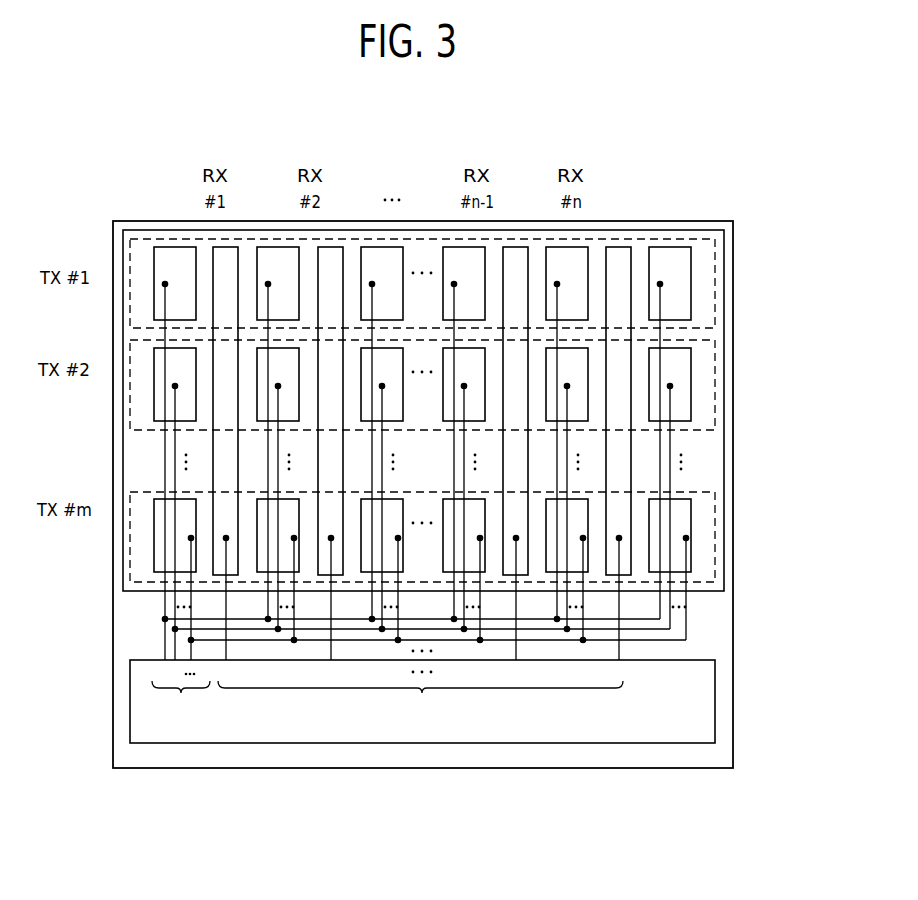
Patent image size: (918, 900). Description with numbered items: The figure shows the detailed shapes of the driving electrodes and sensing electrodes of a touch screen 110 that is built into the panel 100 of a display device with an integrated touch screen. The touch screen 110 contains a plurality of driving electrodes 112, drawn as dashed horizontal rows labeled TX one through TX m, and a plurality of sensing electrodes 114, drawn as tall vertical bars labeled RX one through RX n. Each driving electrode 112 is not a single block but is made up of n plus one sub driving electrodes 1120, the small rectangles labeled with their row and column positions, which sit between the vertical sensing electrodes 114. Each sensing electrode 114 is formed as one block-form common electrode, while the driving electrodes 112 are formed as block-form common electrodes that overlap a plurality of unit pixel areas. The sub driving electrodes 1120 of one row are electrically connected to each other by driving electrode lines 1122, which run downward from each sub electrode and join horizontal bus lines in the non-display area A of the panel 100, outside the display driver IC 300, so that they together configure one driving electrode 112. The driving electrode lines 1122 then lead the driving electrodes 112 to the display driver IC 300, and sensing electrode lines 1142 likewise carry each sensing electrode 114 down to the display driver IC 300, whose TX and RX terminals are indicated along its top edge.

The panel 100 is at (735, 295).
The touch screen 110 is at (725, 385).
The driving electrode 112 is at (130, 240).
The sub driving electrode 1120 is at (165, 247).
The sensing electrode 114 is at (225, 247).
The driving electrode line 1122 is at (165, 460).
The sensing electrode line 1142 is at (226, 602).
The display driver IC 300 is at (716, 700).
The non-display area A is at (725, 643).